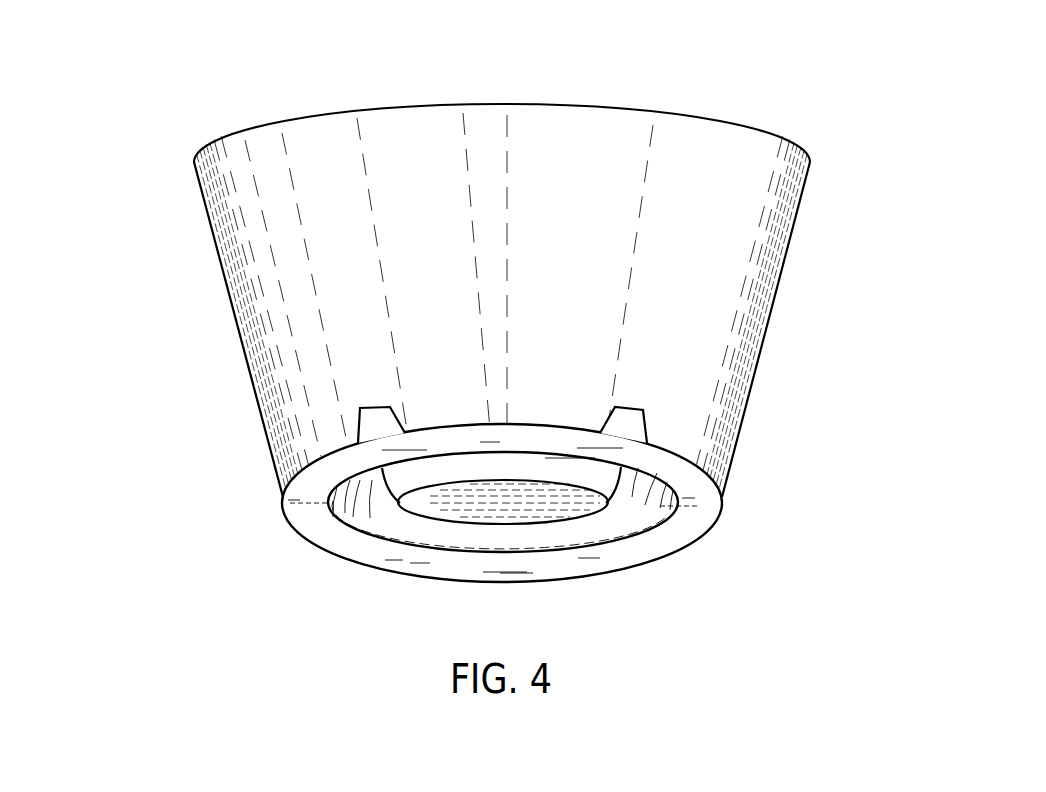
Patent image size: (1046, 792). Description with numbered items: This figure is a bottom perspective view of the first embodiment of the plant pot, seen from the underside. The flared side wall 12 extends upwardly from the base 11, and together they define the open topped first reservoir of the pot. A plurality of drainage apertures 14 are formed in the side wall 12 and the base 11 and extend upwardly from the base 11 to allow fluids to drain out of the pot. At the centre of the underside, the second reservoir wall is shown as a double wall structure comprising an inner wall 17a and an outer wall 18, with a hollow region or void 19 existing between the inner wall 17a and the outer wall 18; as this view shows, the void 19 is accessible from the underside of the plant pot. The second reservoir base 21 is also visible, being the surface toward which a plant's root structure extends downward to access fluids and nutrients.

The base 11 is at (307, 500).
The side wall 12 is at (222, 278).
The drainage apertures 14 is at (363, 422).
The inner wall 17a is at (433, 472).
The outer wall 18 is at (392, 523).
The void 19 is at (628, 511).
The second reservoir base 21 is at (495, 498).